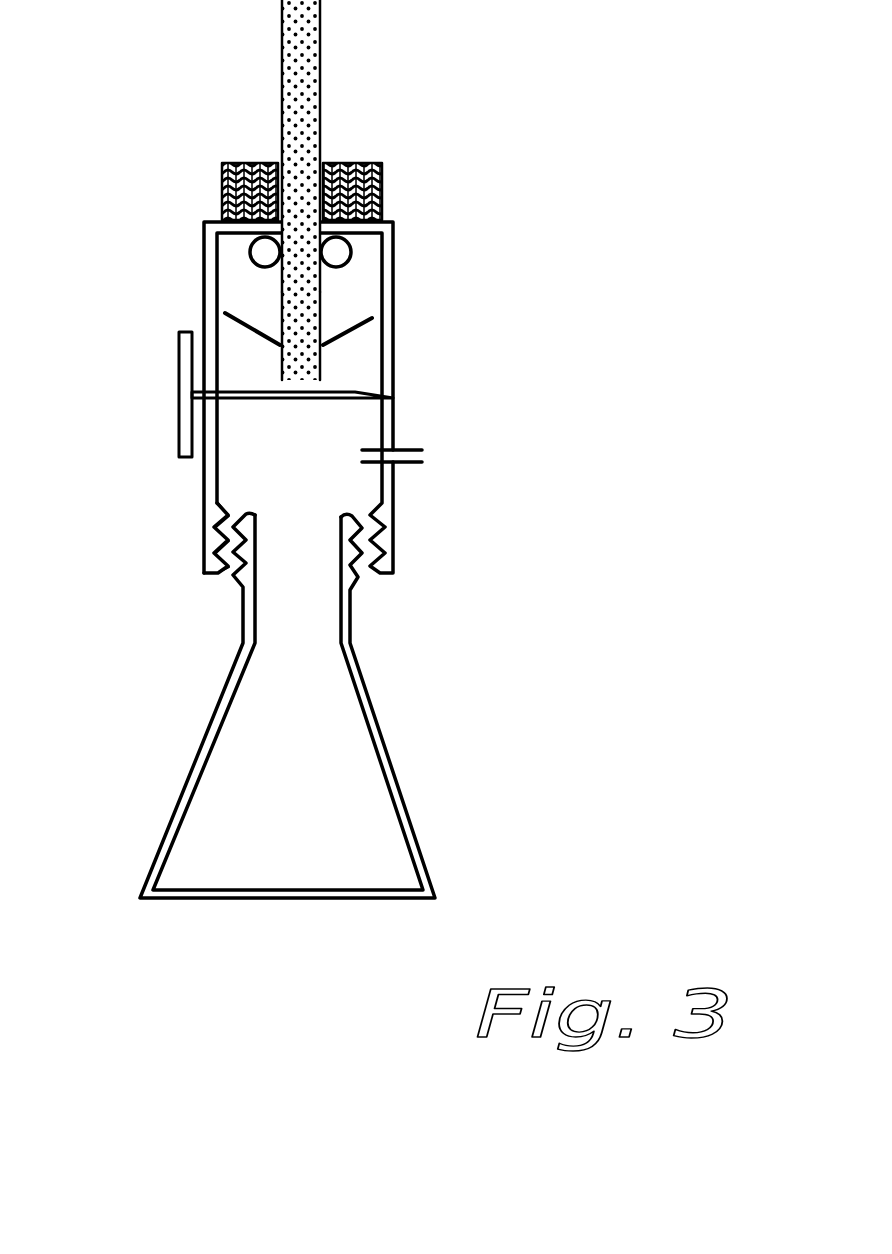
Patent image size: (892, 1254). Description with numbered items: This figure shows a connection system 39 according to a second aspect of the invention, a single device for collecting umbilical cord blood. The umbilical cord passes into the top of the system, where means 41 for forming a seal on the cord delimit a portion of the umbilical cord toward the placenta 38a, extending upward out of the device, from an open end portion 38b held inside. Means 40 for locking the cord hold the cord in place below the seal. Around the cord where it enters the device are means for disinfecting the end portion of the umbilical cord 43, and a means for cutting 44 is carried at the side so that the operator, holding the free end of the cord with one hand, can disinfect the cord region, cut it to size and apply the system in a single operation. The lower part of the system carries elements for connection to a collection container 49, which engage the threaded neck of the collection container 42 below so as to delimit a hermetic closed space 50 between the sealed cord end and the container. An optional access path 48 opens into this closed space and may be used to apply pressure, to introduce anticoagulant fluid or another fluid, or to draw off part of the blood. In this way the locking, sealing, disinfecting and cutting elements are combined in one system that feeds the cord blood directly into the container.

The portion of the umbilical cord toward the placenta 38a is at (305, 80).
The open end portion 38b is at (290, 292).
The connection system 39 is at (203, 245).
The means for locking the cord 40 is at (362, 325).
The means for forming a seal 41 is at (351, 252).
The collection container 42 is at (390, 765).
The means for disinfecting the end portion of the umbilical cord 43 is at (377, 163).
The means for cutting 44 is at (178, 407).
The access path 48 is at (422, 458).
The elements for connection to a collection container 49 is at (372, 577).
The hermetic closed space 50 is at (268, 470).